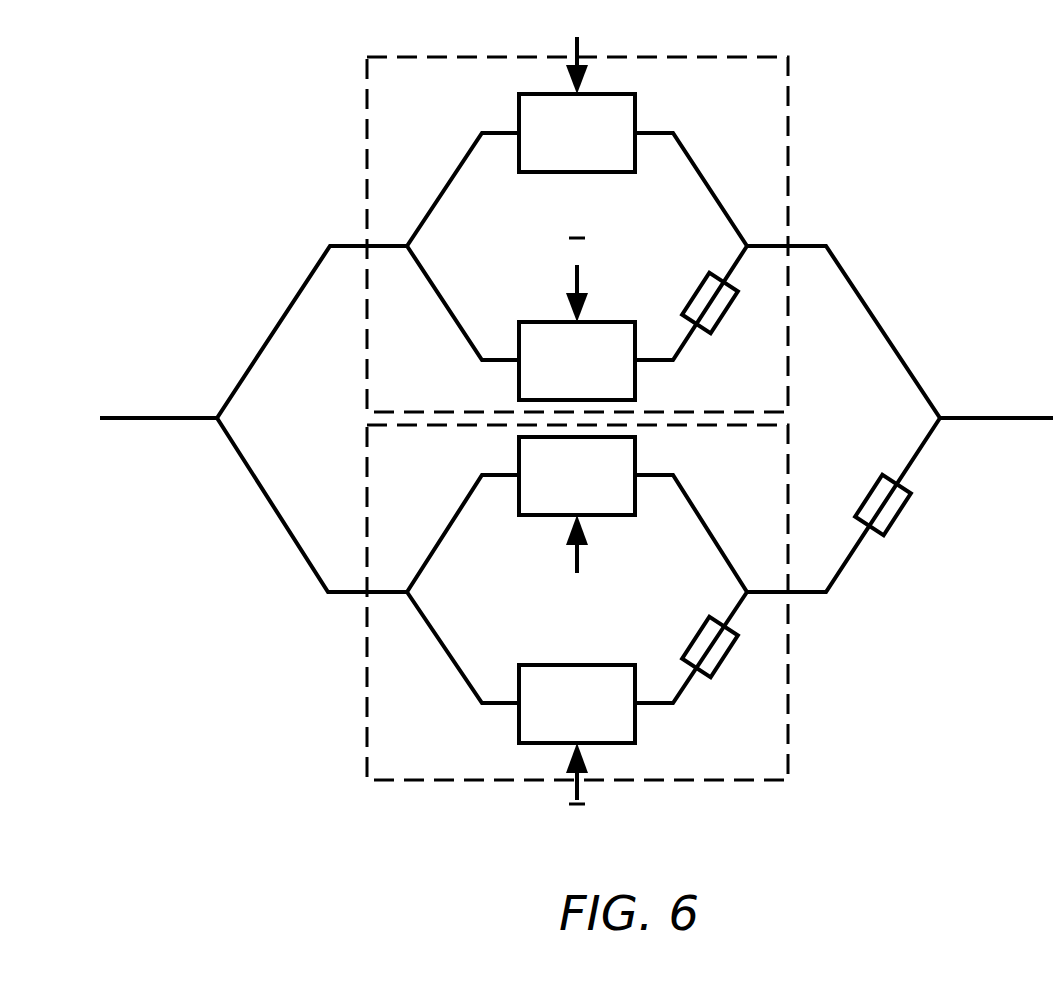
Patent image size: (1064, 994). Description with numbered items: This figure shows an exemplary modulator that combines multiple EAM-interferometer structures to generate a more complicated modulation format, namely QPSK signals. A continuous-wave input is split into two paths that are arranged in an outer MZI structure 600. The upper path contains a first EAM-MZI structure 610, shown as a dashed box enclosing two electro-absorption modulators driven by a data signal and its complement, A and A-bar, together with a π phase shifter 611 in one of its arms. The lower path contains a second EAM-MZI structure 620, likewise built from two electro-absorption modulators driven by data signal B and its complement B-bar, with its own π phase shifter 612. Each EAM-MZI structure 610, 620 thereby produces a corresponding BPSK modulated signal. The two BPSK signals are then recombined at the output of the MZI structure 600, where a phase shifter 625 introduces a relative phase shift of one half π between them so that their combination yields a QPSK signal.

The MZI structure 600 is at (882, 61).
The first EAM-MZI structure 610 is at (367, 148).
The π phase shifter 611 is at (703, 279).
The second EAM-MZI structure 620 is at (367, 682).
The π phase shifter 612 is at (703, 622).
The phase shifter 625 is at (874, 479).